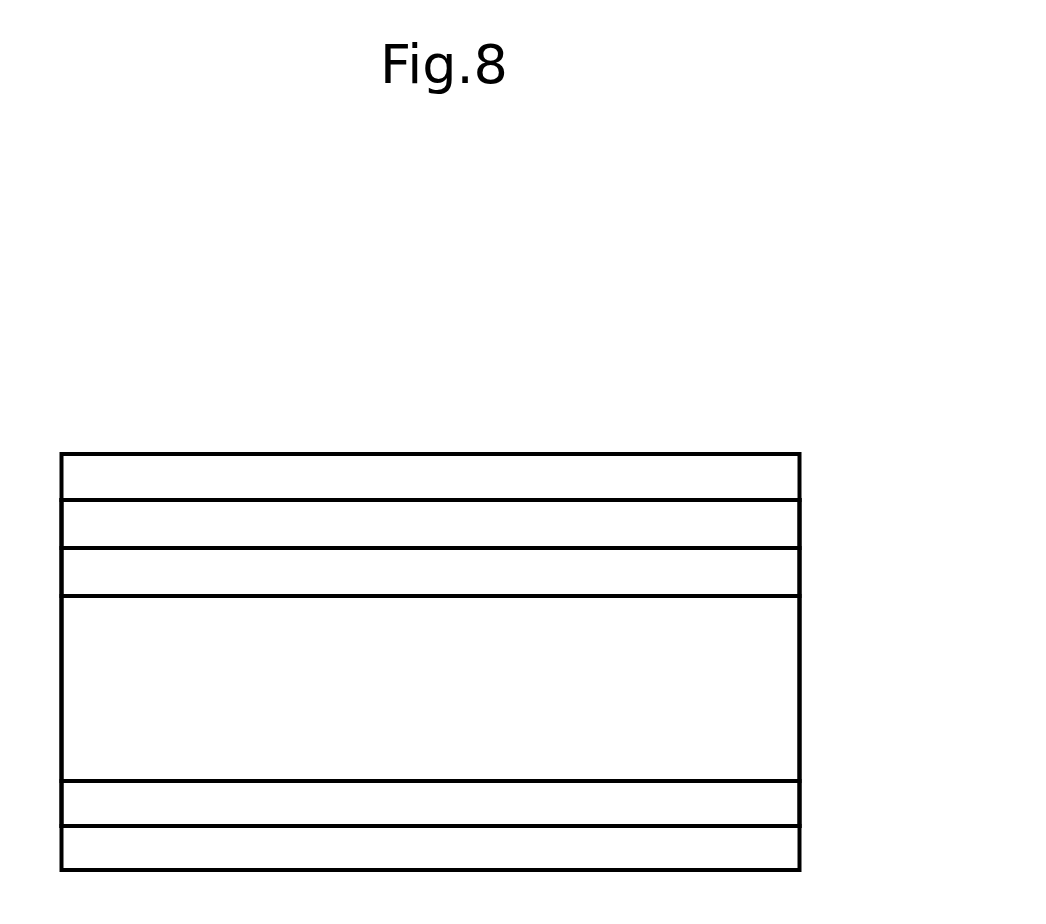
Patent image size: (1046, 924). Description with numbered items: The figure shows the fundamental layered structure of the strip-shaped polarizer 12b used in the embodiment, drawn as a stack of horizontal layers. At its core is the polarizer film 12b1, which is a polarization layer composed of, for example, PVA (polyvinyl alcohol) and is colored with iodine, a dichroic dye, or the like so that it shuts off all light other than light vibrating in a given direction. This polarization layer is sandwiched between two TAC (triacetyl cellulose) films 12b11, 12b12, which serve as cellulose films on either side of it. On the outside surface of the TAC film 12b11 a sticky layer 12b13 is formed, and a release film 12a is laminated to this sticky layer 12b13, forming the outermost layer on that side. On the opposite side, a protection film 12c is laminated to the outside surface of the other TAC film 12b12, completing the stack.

The release film 12a is at (777, 471).
The polarizer 12b is at (312, 428).
The sticky layer 12b13 is at (772, 526).
The TAC film 12b11 is at (768, 574).
The polarizer film 12b1 is at (770, 691).
The TAC film 12b12 is at (760, 802).
The protection film 12c is at (770, 855).